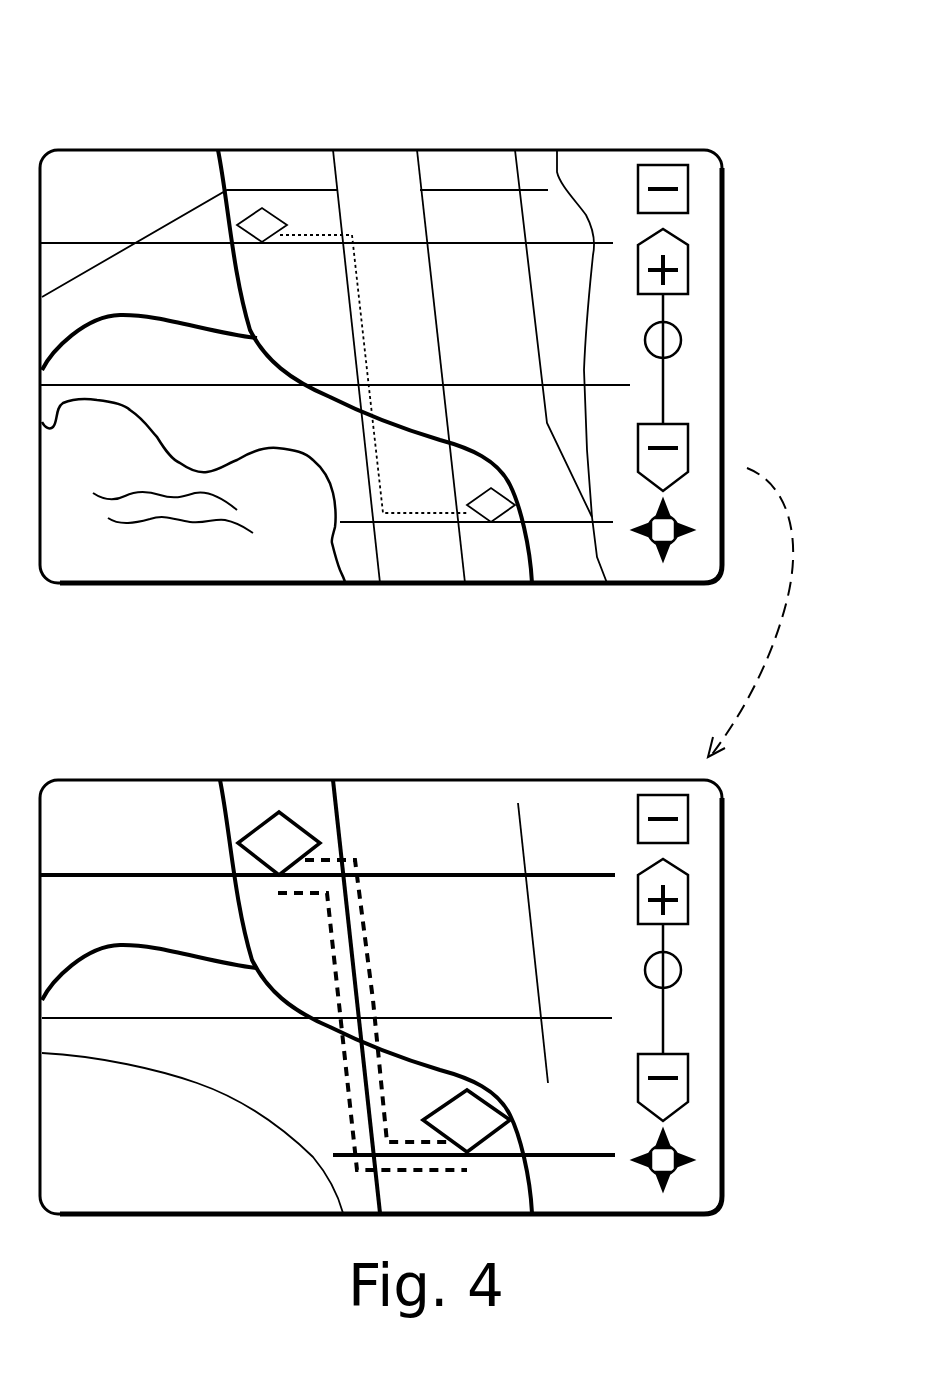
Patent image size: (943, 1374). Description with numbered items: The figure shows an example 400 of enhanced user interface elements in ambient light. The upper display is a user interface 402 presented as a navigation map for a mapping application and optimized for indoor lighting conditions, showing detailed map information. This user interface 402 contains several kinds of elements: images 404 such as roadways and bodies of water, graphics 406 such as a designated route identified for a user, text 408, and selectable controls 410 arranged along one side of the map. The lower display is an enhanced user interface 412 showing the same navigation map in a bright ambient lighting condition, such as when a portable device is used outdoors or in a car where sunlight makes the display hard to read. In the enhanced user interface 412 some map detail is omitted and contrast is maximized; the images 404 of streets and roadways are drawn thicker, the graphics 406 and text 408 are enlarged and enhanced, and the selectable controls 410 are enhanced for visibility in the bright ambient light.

The example 400 is at (715, 62).
The user interface 402 is at (498, 150).
The images 404 is at (207, 180).
The graphics 406 is at (340, 222).
The text 408 is at (277, 217).
The selectable controls 410 is at (695, 234).
The enhanced user interface 412 is at (497, 780).